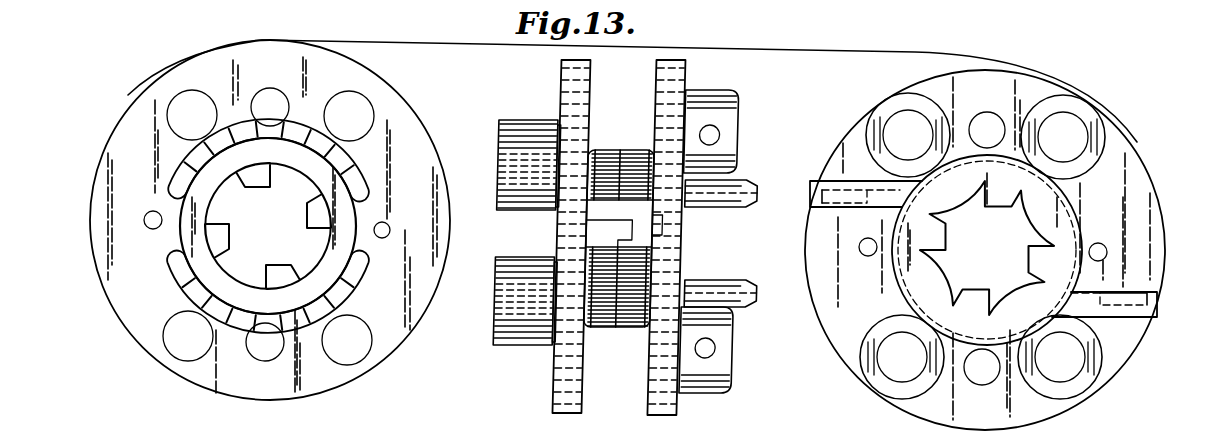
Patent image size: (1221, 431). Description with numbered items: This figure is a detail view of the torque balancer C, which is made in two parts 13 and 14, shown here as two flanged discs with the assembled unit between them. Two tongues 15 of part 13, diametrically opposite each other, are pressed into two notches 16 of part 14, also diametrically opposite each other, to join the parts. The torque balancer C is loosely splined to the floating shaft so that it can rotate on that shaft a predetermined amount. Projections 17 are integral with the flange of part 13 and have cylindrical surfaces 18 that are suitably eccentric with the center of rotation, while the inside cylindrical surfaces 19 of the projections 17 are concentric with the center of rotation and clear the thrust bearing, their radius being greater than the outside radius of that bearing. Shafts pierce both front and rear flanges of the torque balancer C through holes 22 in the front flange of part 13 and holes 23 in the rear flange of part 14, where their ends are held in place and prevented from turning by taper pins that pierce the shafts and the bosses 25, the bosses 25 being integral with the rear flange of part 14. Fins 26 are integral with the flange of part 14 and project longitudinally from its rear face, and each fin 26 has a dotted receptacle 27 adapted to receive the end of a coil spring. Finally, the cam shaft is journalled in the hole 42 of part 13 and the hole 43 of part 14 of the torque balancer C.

The part of torque balancer 13 is at (333, 72).
The part of torque balancer 14 is at (688, 75).
The tongues 15 is at (640, 222).
The notches 16 is at (688, 222).
The projections 17 is at (356, 163).
The cylindrical surfaces 18 is at (237, 133).
The inside cylindrical surfaces 19 is at (195, 153).
The holes 22 is at (192, 93).
The holes 23 is at (907, 115).
The bosses 25 is at (722, 100).
The fins 26 is at (755, 180).
The receptacle 27 is at (738, 200).
The hole 42 is at (268, 95).
The hole 43 is at (983, 113).
The torque balancer C is at (165, 240).